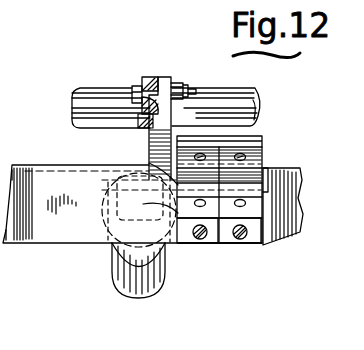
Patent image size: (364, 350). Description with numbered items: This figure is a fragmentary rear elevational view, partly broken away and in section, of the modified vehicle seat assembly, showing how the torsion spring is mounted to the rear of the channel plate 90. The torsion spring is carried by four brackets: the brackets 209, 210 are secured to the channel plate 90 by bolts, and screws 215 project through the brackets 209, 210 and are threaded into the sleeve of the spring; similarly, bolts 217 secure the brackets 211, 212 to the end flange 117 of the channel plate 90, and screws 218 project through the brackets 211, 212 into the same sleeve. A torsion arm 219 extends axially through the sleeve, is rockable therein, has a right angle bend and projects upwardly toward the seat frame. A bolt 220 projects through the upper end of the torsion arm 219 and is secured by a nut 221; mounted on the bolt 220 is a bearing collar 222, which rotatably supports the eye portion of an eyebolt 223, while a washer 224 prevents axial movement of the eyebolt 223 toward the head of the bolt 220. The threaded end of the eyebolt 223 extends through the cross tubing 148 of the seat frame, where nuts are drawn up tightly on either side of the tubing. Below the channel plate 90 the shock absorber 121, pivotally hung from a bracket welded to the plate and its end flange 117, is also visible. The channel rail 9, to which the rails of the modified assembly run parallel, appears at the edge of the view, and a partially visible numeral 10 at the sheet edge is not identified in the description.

The cross tubing 148 is at (250, 89).
The torsion arm 219 is at (148, 151).
The washer 224 is at (140, 83).
The eyebolt 223 is at (148, 77).
The bearing collar 222 is at (174, 83).
The nut 221 is at (178, 85).
The bolt 220 is at (190, 89).
The bracket 210 is at (197, 137).
The bracket 209 is at (252, 147).
The screws 215 is at (205, 158).
The screws 218 is at (311, 202).
The channel plate 90 is at (295, 213).
The end flange 117 is at (55, 243).
The shock absorber 121 is at (142, 290).
The bracket 211 is at (186, 244).
The bolts 217 is at (200, 240).
The bracket 212 is at (247, 244).
The channel rail 9 is at (10, 178).
The plate edge 10 is at (5, 245).